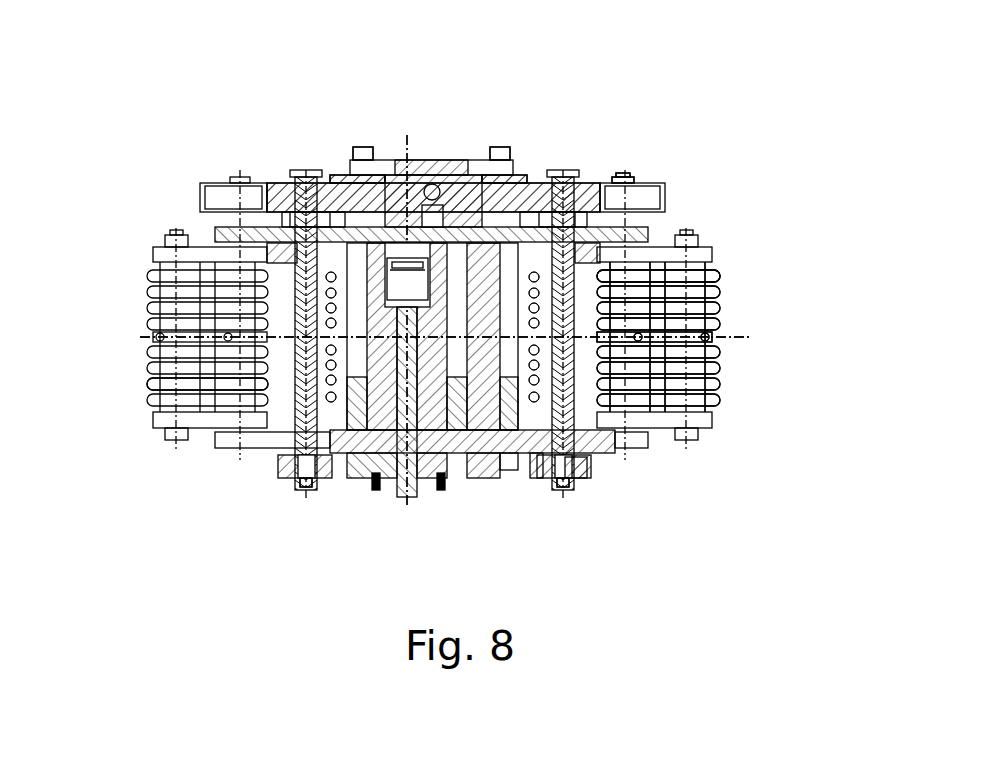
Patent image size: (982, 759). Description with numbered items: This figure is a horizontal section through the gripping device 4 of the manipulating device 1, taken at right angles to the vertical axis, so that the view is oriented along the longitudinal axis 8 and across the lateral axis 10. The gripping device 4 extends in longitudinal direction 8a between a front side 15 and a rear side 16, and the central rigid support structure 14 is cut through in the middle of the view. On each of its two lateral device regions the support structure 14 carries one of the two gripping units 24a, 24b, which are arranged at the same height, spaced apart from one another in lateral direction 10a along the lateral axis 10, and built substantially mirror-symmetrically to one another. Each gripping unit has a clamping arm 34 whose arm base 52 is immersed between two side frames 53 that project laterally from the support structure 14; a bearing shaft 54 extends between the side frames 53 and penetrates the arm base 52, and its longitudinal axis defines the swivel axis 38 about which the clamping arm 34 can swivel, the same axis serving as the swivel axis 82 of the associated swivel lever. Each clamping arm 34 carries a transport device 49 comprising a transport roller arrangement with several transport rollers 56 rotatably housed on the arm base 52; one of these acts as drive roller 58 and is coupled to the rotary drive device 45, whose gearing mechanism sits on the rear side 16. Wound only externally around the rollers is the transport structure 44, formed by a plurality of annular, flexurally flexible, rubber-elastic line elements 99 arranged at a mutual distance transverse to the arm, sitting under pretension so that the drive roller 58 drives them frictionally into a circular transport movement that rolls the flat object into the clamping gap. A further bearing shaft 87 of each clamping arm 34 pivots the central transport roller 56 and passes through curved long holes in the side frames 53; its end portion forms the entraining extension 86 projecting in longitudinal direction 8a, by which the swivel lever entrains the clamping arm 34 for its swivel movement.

The manipulating device 1 is at (752, 188).
The gripping device 4 is at (273, 165).
The longitudinal axis 8 is at (407, 147).
The longitudinal direction 8a is at (407, 147).
The lateral axis 10 is at (740, 337).
The lateral direction 10a is at (740, 337).
The support structure 14 is at (333, 175).
The front side 15 is at (540, 135).
The rear side 16 is at (507, 495).
The first gripping unit 24a is at (730, 376).
The second gripping unit 24b is at (128, 400).
The clamping arm 34 is at (146, 290).
The swivel axis 38 is at (305, 492).
The swivel axis 82 is at (305, 492).
The transport structure 44 is at (146, 410).
The rotary drive device 45 is at (459, 492).
The transport device 49 is at (195, 272).
The arm base 52 is at (205, 422).
The side frame 53 is at (247, 230).
The bearing shaft 54 is at (300, 183).
The transport roller 56 is at (505, 147).
The drive roller 58 is at (345, 520).
The entraining extension 86 is at (620, 177).
The bearing shaft 87 is at (620, 177).
The line element 99 is at (150, 395).